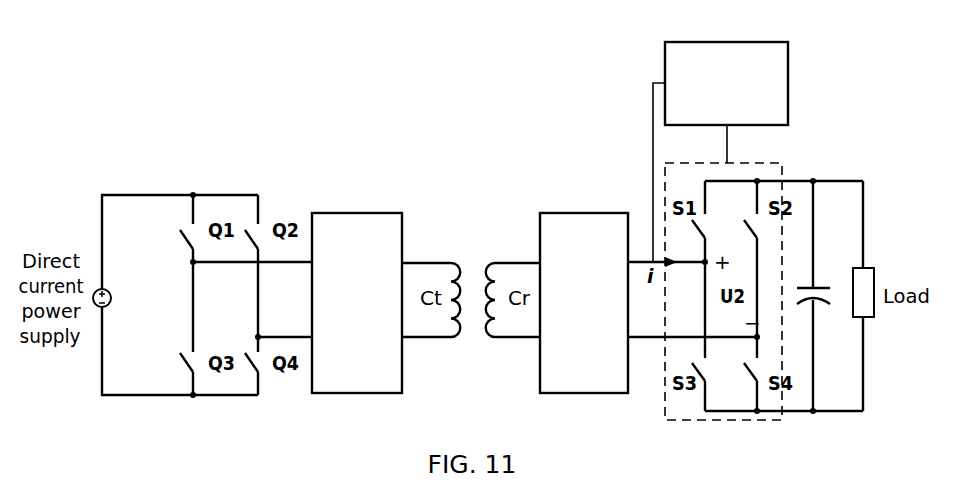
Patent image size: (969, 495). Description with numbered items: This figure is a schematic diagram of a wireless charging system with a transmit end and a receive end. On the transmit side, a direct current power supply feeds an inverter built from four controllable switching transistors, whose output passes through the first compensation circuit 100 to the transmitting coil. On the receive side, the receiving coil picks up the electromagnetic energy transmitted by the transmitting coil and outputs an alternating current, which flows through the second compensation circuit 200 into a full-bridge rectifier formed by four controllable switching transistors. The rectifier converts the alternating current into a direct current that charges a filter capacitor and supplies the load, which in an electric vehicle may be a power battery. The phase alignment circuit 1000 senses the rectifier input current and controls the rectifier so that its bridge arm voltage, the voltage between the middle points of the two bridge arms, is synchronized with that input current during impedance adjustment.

The first compensation circuit 100 is at (357, 290).
The second compensation circuit 200 is at (584, 290).
The phase alignment circuit 1000 is at (720, 137).